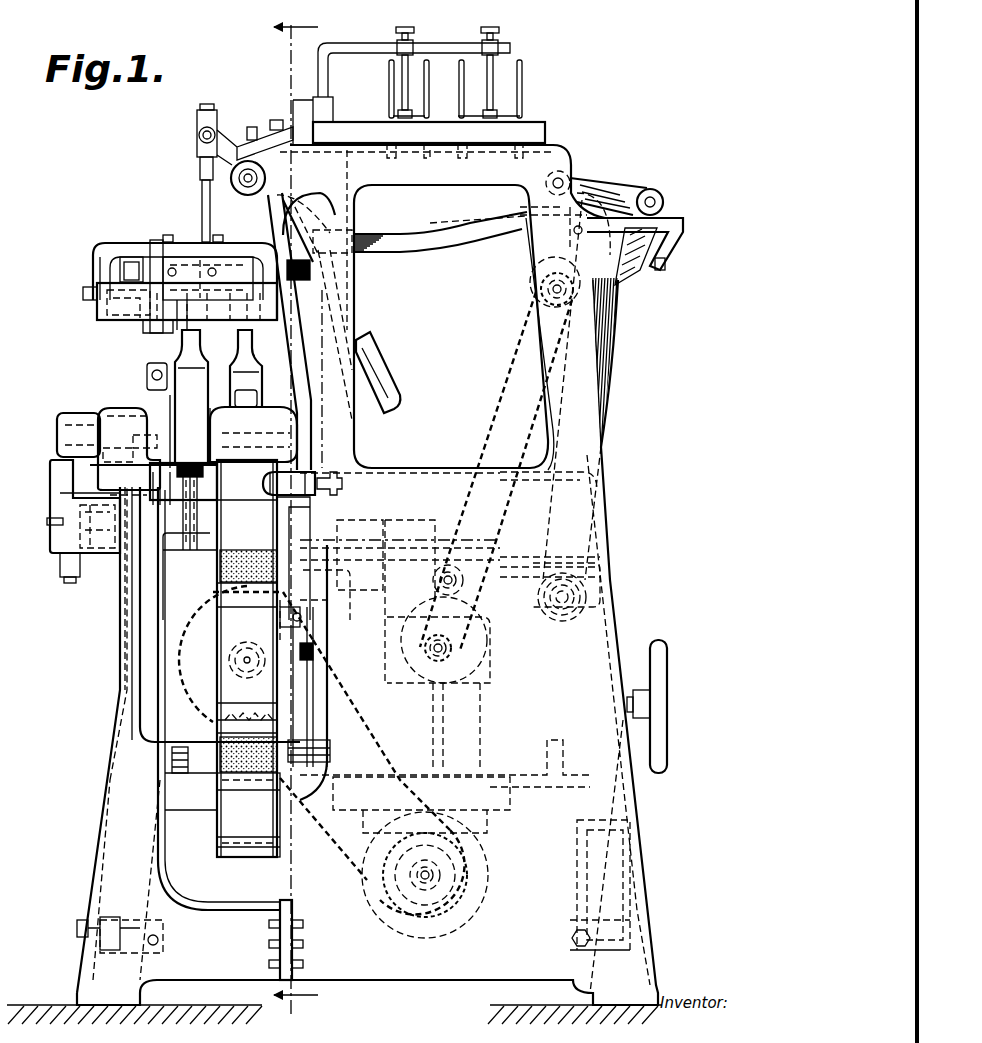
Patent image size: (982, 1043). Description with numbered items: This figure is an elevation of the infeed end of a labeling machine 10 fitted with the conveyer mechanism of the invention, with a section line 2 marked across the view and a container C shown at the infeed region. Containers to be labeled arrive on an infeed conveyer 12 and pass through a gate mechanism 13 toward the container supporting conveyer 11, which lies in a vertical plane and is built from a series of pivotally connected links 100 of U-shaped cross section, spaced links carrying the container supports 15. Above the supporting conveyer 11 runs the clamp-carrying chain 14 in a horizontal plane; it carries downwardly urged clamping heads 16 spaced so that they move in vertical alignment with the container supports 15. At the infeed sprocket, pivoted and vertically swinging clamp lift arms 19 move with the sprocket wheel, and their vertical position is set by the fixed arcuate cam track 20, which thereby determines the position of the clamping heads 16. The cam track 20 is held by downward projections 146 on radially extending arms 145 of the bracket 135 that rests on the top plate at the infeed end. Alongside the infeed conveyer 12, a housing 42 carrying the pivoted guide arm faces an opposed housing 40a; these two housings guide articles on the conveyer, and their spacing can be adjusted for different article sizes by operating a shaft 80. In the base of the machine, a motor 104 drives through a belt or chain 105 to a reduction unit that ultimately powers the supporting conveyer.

The section line 2- 2 is at (296, 522).
The labeling machine 10 is at (362, 288).
The container supporting conveyer 11 is at (245, 524).
The infeed conveyer 12 is at (162, 493).
The gate mechanism 13 is at (128, 406).
The clamp-carrying chain 14 is at (133, 265).
The container supports 15 is at (236, 569).
The clamping heads 16 is at (115, 312).
The clamp lift arms 19 is at (150, 339).
The cam track 20 is at (85, 308).
The opposed housing 40a is at (100, 438).
The housing 42 is at (280, 452).
The shaft 80 is at (77, 487).
The links 100 is at (235, 715).
The motor 104 is at (487, 845).
The belt or chain 105 is at (345, 850).
The bracket 135 is at (185, 248).
The radially extending arms 145 is at (115, 245).
The downward projections 146 is at (93, 268).
The container C is at (212, 392).